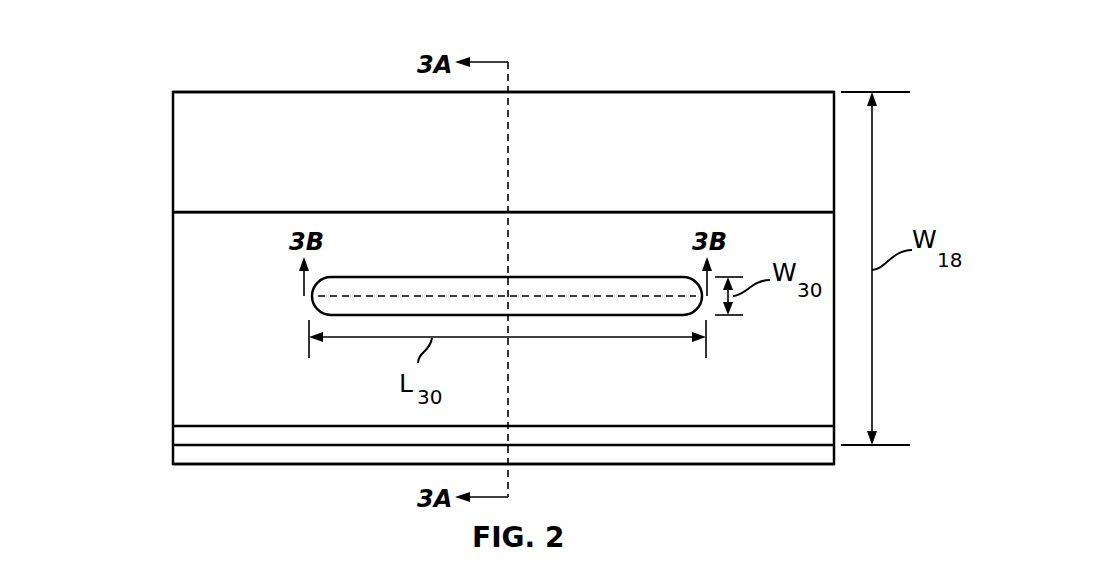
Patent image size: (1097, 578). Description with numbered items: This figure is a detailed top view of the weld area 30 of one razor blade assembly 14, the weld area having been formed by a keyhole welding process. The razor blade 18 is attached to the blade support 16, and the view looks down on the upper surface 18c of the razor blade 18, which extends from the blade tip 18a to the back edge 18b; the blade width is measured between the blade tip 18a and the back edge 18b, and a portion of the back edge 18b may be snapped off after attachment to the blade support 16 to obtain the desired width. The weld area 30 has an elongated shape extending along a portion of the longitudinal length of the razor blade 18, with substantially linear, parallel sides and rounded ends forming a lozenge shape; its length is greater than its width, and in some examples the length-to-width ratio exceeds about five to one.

The razor blade assembly 14 is at (120, 134).
The blade support 16 is at (646, 458).
The razor blade 18 is at (158, 280).
The blade tip 18a is at (263, 92).
The back edge 18b is at (222, 446).
The upper surface 18c is at (503, 176).
The weld area 30 is at (612, 288).